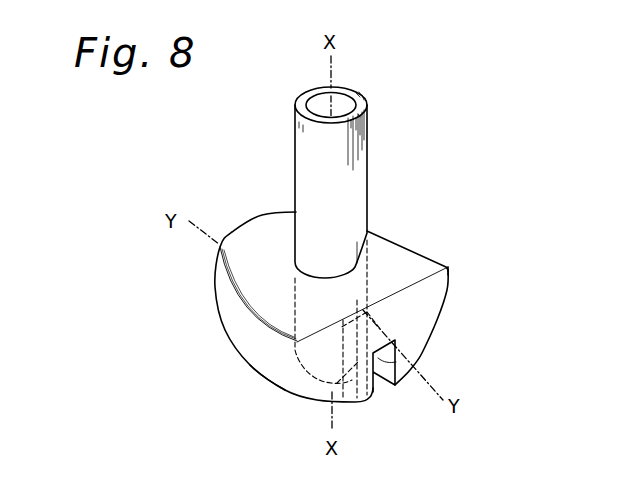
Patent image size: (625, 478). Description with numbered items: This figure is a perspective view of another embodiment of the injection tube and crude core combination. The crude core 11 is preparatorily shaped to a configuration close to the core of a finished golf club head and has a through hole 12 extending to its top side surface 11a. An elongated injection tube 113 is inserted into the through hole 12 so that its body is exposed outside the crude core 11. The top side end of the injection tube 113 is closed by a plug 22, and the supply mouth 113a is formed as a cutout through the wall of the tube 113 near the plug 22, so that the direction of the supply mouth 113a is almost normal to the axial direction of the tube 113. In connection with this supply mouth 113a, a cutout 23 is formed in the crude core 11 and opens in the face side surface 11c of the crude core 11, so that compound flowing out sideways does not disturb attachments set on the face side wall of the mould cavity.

The injection tube 113 is at (364, 146).
The through hole 12 is at (368, 231).
The crude core 11 is at (228, 302).
The face side surface 11c is at (428, 321).
The cutout 23 is at (399, 362).
The top side surface 11a is at (253, 366).
The supply mouth 113a is at (323, 398).
The plug 22 is at (352, 392).